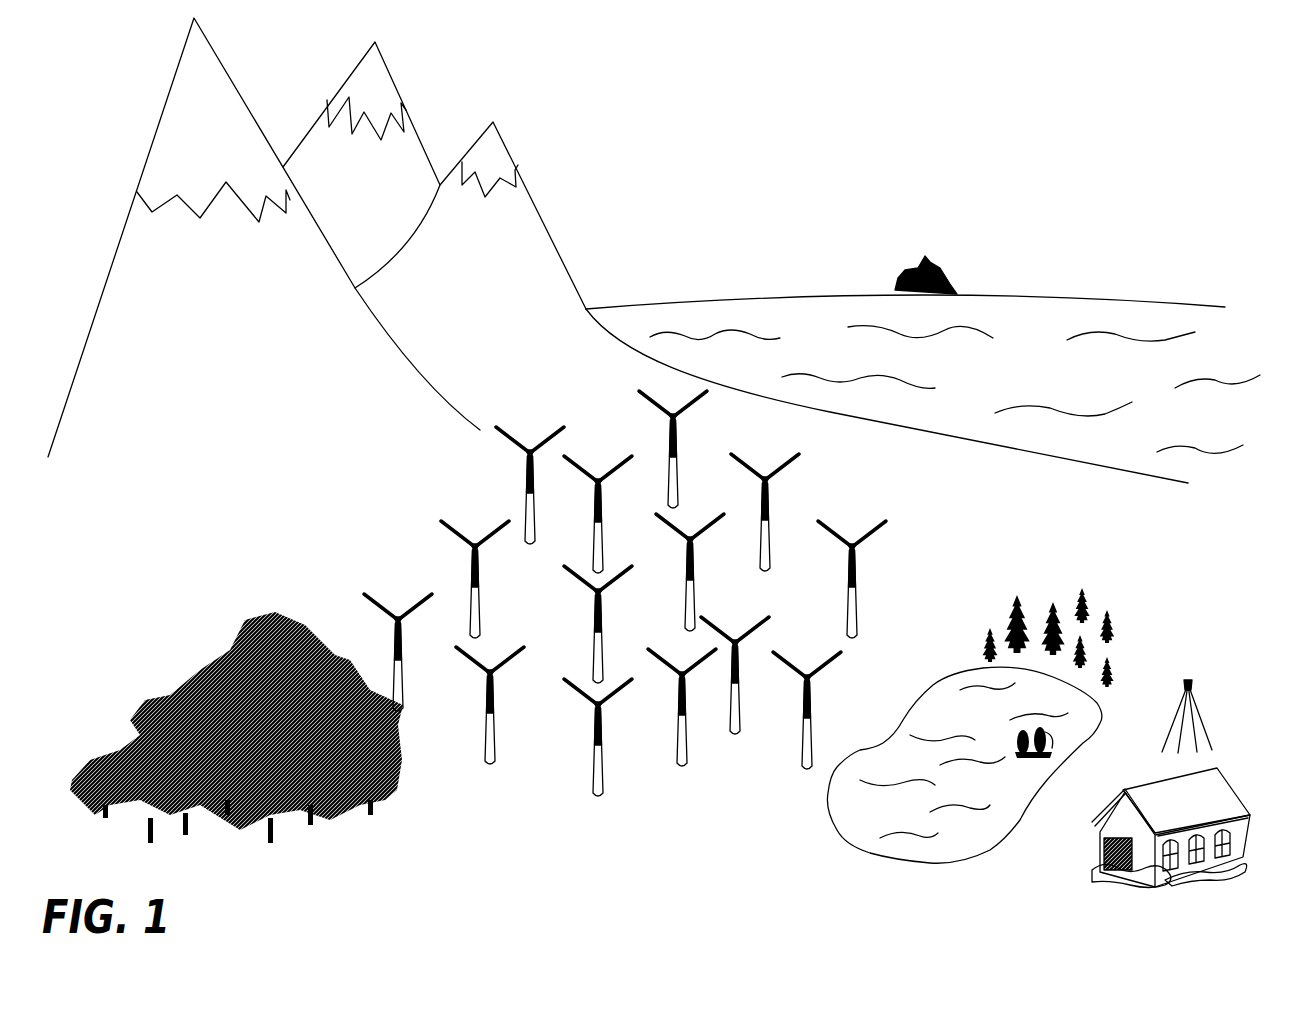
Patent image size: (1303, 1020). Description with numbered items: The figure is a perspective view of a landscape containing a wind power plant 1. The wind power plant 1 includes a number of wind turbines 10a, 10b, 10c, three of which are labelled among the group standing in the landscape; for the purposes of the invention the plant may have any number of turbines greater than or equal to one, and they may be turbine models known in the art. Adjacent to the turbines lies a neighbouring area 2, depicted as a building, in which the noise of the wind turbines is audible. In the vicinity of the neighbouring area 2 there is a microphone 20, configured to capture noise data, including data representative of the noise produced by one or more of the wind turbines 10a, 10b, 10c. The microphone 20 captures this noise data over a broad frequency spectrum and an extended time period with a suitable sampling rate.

The wind power plant 1 is at (412, 524).
The wind turbine 10a is at (667, 442).
The wind turbine 10b is at (873, 518).
The wind turbine 10c is at (578, 676).
The microphone 20 is at (1187, 682).
The neighbouring area 2 is at (1187, 793).